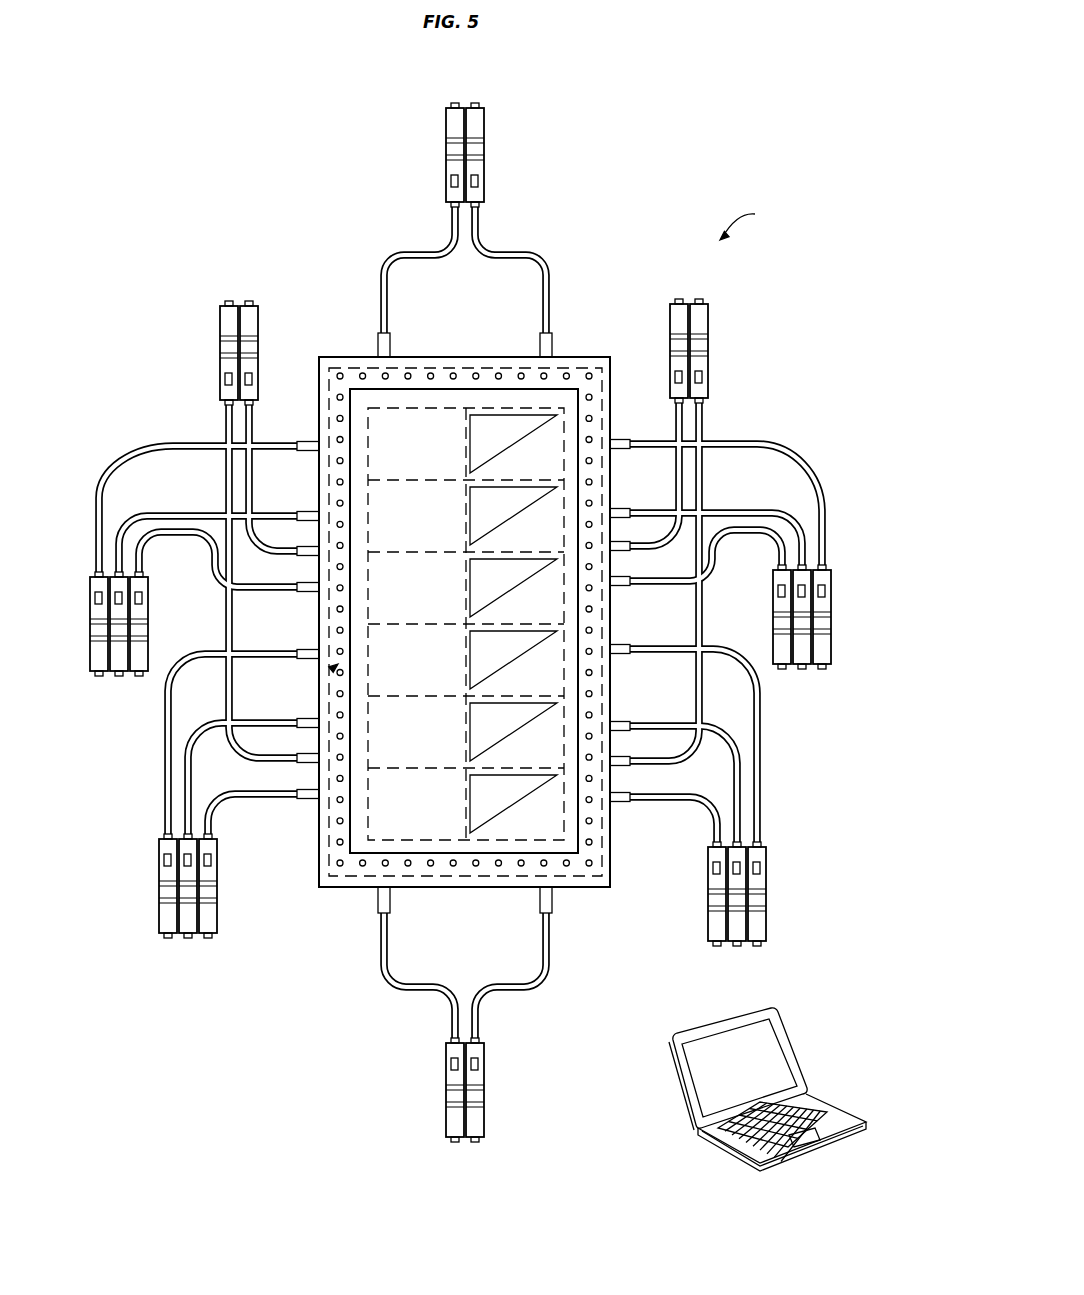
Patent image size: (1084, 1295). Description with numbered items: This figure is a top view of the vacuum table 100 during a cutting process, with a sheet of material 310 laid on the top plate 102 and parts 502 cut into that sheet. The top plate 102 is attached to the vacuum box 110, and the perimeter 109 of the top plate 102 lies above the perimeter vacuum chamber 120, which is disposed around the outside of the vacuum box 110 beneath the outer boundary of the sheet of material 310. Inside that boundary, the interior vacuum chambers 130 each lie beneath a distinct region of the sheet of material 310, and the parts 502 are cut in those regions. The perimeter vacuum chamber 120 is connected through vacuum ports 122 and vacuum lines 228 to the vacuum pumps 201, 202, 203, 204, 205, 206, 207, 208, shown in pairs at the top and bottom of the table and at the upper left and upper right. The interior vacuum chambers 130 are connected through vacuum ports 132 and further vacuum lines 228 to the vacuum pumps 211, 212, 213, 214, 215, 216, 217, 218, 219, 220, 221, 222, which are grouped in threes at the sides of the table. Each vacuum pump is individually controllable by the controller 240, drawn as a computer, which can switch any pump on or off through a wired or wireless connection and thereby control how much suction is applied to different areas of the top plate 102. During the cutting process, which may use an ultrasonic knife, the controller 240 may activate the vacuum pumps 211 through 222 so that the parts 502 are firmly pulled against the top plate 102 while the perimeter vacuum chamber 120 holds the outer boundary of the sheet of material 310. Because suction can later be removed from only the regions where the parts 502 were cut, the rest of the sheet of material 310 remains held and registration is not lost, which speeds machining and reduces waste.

The vacuum table 100 is at (517, 573).
The top plate 102 is at (450, 360).
The perimeter 109 is at (336, 666).
The vacuum box 110 is at (613, 392).
The perimeter vacuum chamber 120 is at (506, 378).
The vacuum ports 122 is at (378, 338).
The interior vacuum chambers 130 is at (385, 468).
The vacuum ports 132 is at (308, 440).
The vacuum pump 201 is at (452, 1118).
The vacuum pump 202 is at (482, 1118).
The vacuum pump 203 is at (448, 163).
The vacuum pump 204 is at (480, 167).
The vacuum pump 205 is at (218, 321).
The vacuum pump 206 is at (259, 322).
The vacuum pump 207 is at (668, 320).
The vacuum pump 208 is at (707, 318).
The vacuum pump 211 is at (163, 912).
The vacuum pump 212 is at (188, 928).
The vacuum pump 213 is at (213, 918).
The vacuum pump 214 is at (100, 676).
The vacuum pump 215 is at (118, 676).
The vacuum pump 216 is at (149, 613).
The vacuum pump 217 is at (713, 921).
The vacuum pump 218 is at (735, 935).
The vacuum pump 219 is at (763, 925).
The vacuum pump 220 is at (781, 622).
The vacuum pump 221 is at (800, 661).
The vacuum pump 222 is at (827, 619).
The vacuum lines 228 is at (448, 227).
The controller 240 is at (842, 1120).
The sheet of material 310 is at (333, 553).
The parts 502 is at (470, 444).